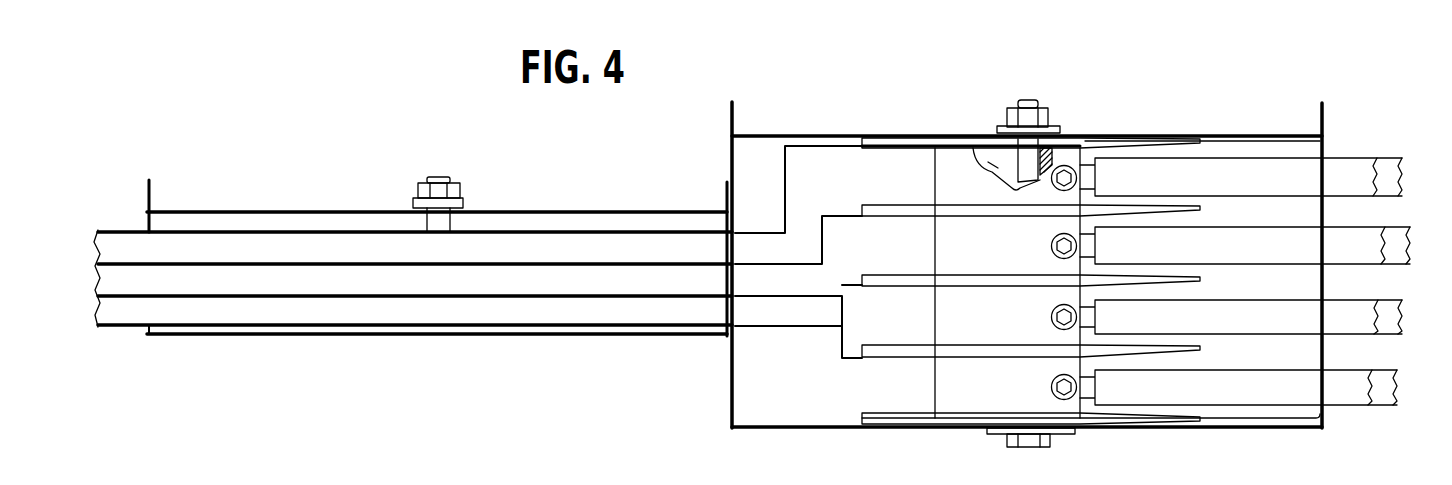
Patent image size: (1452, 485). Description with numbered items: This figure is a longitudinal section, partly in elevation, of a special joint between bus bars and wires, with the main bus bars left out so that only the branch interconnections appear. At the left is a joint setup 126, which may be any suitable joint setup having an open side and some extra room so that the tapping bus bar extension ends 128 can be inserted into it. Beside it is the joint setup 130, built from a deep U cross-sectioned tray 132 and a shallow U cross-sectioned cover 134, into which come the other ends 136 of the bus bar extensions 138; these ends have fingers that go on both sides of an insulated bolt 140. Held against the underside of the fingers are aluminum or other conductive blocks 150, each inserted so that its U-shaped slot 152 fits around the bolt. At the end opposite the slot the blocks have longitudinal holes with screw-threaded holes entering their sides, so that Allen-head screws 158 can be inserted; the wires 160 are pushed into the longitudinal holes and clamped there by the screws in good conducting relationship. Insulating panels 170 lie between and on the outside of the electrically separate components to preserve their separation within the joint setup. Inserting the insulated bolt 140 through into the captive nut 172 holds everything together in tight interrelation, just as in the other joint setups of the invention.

The joint setup 126 is at (247, 210).
The tapping bus bar extension ends 128 is at (505, 230).
The joint setup 130 is at (765, 133).
The tray 132 is at (776, 430).
The cover 134 is at (826, 133).
The other ends of the bus bar extensions 136 is at (803, 144).
The bus bar extensions 138 is at (617, 230).
The insulated bolt 140 is at (1020, 165).
The conductive blocks 150 is at (930, 172).
The U-shaped slot 152 is at (993, 160).
The Allen-head screws 158 is at (1072, 164).
The wires 160 is at (1340, 162).
The insulating panels 170 is at (1125, 135).
The captive nut 172 is at (1050, 125).